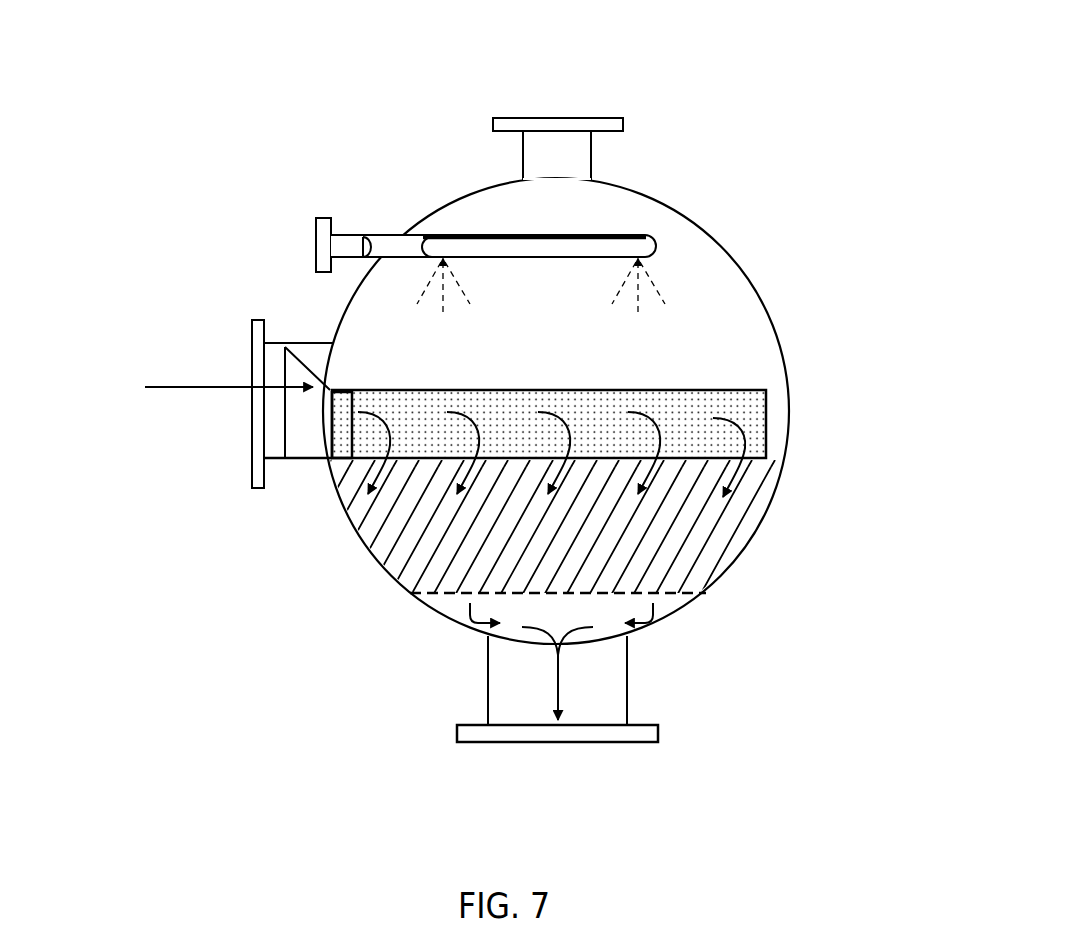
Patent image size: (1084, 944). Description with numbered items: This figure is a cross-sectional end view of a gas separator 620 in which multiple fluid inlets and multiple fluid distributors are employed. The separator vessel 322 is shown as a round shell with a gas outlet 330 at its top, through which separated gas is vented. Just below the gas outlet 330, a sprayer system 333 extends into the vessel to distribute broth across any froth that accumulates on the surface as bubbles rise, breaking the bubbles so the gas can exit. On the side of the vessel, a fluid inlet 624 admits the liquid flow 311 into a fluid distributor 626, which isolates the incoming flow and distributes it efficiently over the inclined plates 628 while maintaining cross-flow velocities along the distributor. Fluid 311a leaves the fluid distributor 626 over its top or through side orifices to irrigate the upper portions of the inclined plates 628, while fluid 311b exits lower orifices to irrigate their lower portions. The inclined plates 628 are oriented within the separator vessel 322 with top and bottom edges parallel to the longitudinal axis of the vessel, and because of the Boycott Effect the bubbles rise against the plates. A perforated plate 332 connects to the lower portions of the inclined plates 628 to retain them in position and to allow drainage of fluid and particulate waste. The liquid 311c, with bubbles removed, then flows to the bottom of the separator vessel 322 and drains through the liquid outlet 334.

The separator 620 is at (777, 125).
The separator vessel 322 is at (777, 287).
The gas outlet 330 is at (565, 117).
The sprayer system 333 is at (315, 247).
The fluid inlet 624 is at (250, 340).
The liquid flow 311 is at (182, 383).
The liquid flow 311a is at (659, 408).
The liquid flow 311b is at (653, 603).
The liquid flow 311c is at (565, 683).
The fluid distributor 626 is at (743, 388).
The inclined plates 628 is at (377, 527).
The perforated plate 332 is at (437, 602).
The liquid outlet 334 is at (638, 753).